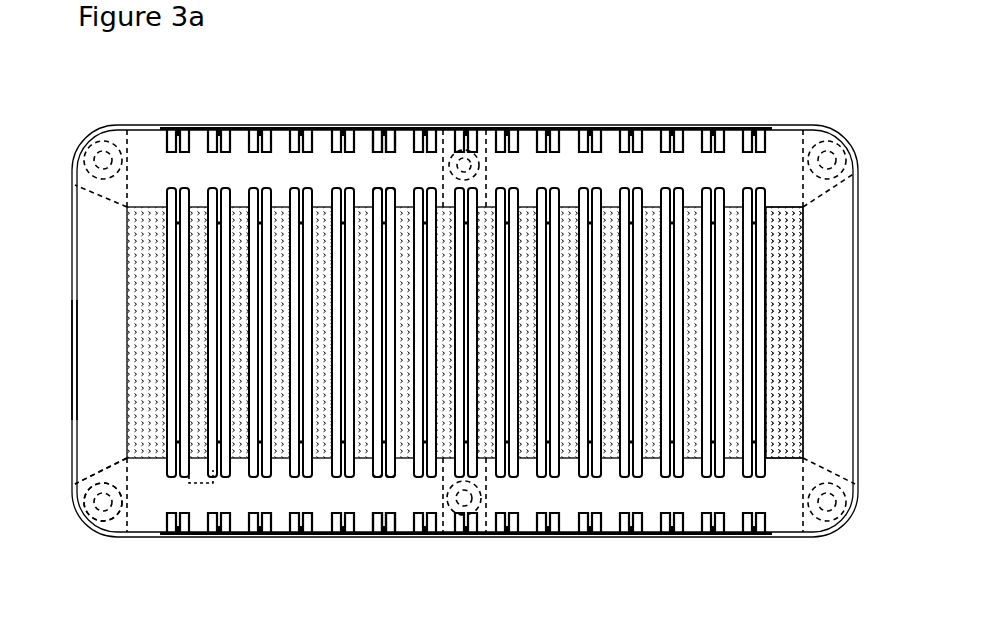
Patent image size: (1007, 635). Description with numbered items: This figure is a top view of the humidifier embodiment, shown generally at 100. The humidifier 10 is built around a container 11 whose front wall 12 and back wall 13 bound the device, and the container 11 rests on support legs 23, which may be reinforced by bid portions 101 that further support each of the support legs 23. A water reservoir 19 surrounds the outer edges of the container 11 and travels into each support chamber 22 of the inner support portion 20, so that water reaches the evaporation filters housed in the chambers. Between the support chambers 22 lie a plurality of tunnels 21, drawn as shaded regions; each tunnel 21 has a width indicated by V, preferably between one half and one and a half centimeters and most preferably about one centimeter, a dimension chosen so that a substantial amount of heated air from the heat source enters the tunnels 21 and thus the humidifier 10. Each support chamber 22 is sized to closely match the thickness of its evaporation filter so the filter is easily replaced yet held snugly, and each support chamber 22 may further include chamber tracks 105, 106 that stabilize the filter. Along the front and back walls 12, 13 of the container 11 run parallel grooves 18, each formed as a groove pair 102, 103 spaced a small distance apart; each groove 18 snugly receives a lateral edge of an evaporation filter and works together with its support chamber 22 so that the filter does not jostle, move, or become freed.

The top view of the humidifier 100 is at (342, 105).
The humidifier 10 is at (850, 312).
The container 11 is at (147, 127).
The front wall 12 is at (565, 536).
The back wall 13 is at (652, 127).
The groove 18 is at (597, 127).
The water reservoir 19 is at (83, 357).
The inner support portion 20 is at (762, 208).
The tunnels 21 is at (360, 460).
The support chamber 22 is at (765, 373).
The support legs 23 is at (813, 518).
The bid portions 101 is at (100, 465).
The groove pair member 102 is at (392, 127).
The groove pair member 103 is at (443, 132).
The chamber track 105 is at (425, 478).
The chamber track 106 is at (293, 456).
The tunnel width V is at (196, 483).